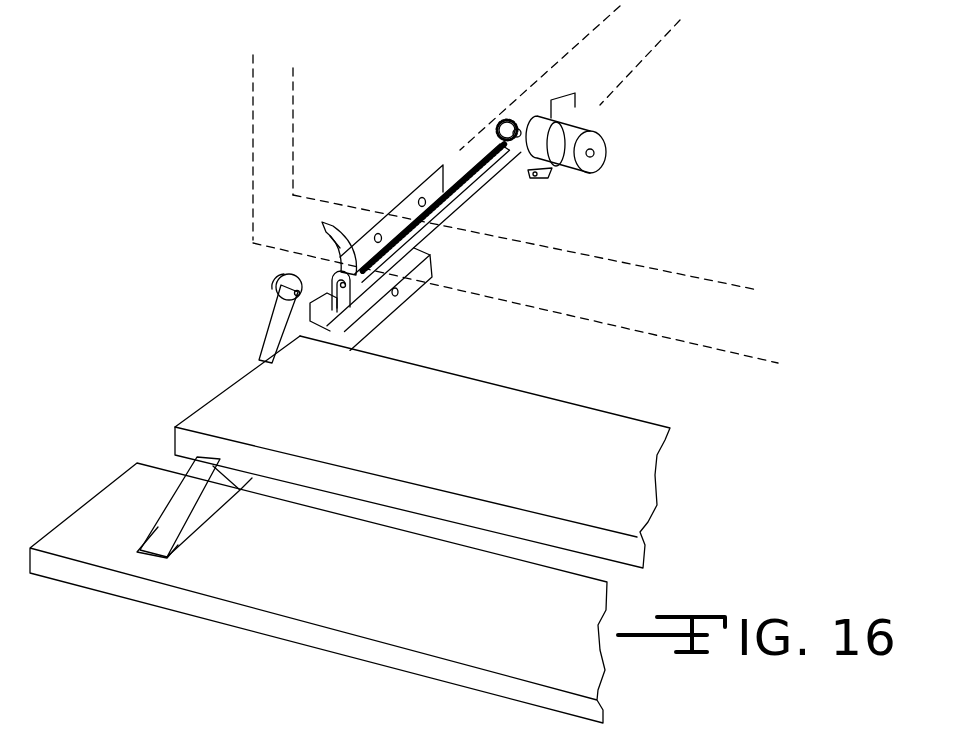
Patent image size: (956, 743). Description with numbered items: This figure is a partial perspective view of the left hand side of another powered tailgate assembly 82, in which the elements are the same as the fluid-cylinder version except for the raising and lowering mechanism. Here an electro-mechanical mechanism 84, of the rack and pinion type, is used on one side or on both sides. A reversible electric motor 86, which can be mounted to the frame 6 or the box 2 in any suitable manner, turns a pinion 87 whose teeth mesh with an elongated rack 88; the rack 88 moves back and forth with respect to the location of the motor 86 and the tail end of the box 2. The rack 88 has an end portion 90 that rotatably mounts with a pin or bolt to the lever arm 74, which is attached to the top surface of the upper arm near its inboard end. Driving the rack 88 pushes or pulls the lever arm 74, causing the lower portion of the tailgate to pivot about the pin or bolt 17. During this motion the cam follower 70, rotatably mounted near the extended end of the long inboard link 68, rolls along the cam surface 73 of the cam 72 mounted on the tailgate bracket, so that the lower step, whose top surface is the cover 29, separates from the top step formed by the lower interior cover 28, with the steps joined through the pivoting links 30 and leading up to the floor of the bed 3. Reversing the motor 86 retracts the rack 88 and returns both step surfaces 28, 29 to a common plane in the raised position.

The box 2 is at (277, 128).
The floor of the bed 3 is at (702, 196).
The frame 6 is at (608, 53).
The pin or bolt 17 is at (401, 292).
The lower interior cover 28 is at (365, 452).
The top surface of the lower step 29 is at (395, 603).
The link 30 is at (197, 490).
The long inboard link 68 is at (284, 318).
The cam follower 70 is at (276, 286).
The cam 72 is at (344, 230).
The cam surface 73 is at (334, 242).
The lever arm 74 is at (358, 322).
The powered tailgate assembly 82 is at (203, 397).
The electro-mechanical mechanism 84 is at (610, 129).
The reversible electric motor 86 is at (574, 178).
The pinion 87 is at (503, 124).
The rack 88 is at (494, 181).
The end portion 90 is at (314, 322).